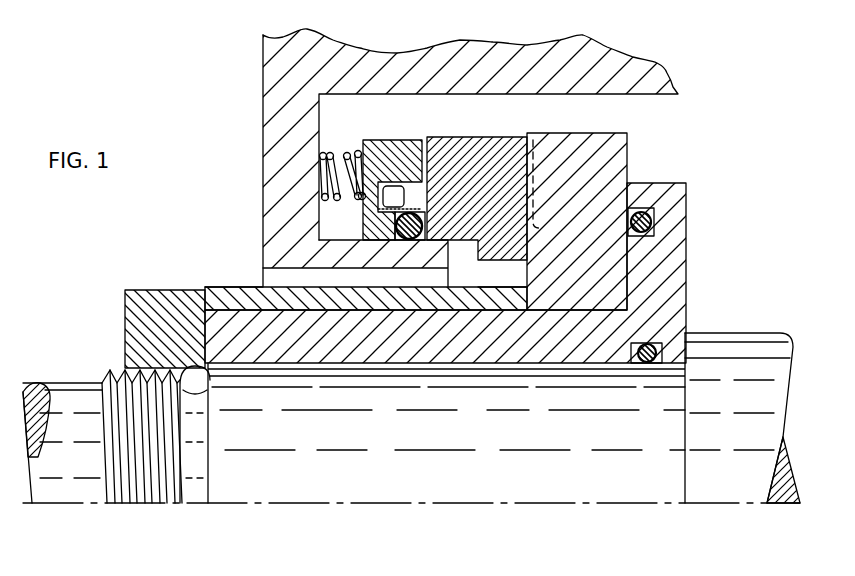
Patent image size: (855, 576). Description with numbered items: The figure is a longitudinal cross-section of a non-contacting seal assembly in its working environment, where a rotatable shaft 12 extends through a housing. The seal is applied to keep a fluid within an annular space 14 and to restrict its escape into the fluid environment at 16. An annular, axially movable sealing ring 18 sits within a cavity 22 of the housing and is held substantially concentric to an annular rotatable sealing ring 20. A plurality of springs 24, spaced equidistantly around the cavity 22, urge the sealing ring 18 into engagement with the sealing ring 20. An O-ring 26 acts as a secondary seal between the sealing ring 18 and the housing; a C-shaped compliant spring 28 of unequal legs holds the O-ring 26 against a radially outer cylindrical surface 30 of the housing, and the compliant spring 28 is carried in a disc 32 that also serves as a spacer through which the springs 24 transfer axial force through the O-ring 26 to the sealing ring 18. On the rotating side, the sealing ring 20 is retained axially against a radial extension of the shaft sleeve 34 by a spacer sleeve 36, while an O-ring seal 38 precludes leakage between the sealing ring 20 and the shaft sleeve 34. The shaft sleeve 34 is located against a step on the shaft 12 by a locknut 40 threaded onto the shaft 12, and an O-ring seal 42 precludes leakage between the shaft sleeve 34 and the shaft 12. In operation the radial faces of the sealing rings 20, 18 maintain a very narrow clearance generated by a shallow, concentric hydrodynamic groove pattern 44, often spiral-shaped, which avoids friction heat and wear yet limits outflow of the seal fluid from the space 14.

The rotatable shaft 12 is at (431, 438).
The annular space 14 is at (672, 138).
The fluid environment 16 is at (236, 220).
The axially movable sealing ring 18 is at (497, 178).
The rotatable sealing ring 20 is at (594, 185).
The cavity 22 is at (353, 126).
The springs 24 is at (336, 178).
The O-ring 26 is at (439, 212).
The compliant spring 28 is at (392, 190).
The radially outer cylindrical surface 30 is at (352, 238).
The disc 32 is at (398, 134).
The shaft sleeve 34 is at (443, 349).
The spacer sleeve 36 is at (241, 291).
The O-ring seal 38 is at (659, 222).
The locknut 40 is at (177, 331).
The O-ring seal 42 is at (657, 335).
The hydrodynamic groove pattern 44 is at (546, 143).